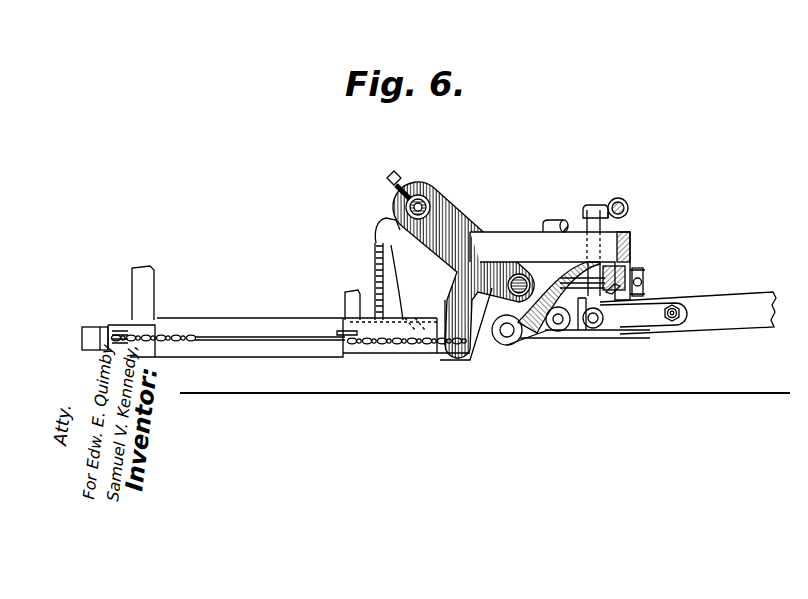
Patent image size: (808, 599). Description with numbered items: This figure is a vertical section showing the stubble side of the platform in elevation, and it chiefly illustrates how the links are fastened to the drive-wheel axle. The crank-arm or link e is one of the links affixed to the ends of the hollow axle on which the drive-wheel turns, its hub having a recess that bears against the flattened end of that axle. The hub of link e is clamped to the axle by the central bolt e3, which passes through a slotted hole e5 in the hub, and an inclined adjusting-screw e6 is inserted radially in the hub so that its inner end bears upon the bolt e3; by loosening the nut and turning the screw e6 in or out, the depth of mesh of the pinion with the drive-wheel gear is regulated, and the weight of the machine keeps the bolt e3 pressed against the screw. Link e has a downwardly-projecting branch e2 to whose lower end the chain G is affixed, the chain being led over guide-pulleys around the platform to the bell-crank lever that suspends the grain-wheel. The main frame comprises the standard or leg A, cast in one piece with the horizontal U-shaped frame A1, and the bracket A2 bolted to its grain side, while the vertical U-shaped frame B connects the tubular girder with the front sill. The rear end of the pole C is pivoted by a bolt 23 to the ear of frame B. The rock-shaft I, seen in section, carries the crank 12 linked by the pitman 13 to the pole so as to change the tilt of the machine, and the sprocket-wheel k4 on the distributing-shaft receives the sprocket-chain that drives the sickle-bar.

The crank-arm e is at (463, 270).
The downwardly-projecting branch e2 is at (485, 309).
The central bolt e3 is at (436, 190).
The slotted hole e5 is at (446, 200).
The adjusting-screw e6 is at (397, 184).
The vertical U-shaped frame B is at (273, 269).
The chain G is at (302, 338).
The standard or leg A is at (535, 296).
The horizontal U-shaped frame A1 is at (632, 247).
The standard or bracket A2 is at (584, 299).
The crank 12 is at (605, 206).
The pitman 13 is at (588, 214).
The rock-shaft I is at (628, 207).
The sprocket-wheel k4 is at (641, 282).
The bolt 23 is at (510, 323).
The pole C is at (688, 313).